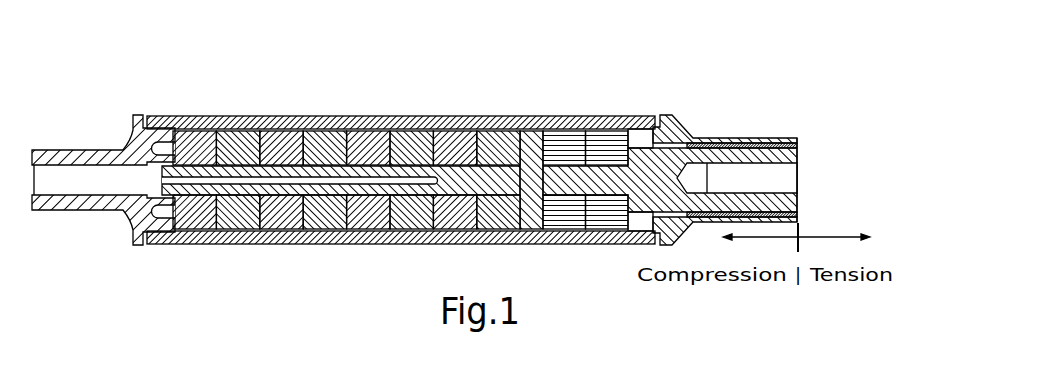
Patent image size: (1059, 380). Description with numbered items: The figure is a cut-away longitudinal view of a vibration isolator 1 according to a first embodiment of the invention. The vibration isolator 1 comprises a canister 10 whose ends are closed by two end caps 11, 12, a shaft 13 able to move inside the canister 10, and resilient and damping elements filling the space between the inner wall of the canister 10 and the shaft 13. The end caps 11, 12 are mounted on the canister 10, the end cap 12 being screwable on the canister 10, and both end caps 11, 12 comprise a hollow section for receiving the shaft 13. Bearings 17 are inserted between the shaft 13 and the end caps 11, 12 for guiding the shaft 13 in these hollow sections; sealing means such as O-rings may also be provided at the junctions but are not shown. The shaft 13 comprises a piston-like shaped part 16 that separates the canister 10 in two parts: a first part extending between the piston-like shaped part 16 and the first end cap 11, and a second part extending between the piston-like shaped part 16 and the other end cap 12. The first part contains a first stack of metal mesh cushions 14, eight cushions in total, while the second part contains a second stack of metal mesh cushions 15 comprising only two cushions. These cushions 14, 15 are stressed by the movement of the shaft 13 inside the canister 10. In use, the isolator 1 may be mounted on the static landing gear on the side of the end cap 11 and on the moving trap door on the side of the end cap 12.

The vibration isolator 1 is at (507, 190).
The canister 10 is at (212, 247).
The end cap 11 is at (133, 140).
The end cap 12 is at (691, 117).
The shaft 13 is at (563, 194).
The metal mesh cushions 14 is at (362, 212).
The metal mesh cushions 15 is at (612, 142).
The piston-like shaped part 16 is at (528, 139).
The bearings 17 is at (148, 206).